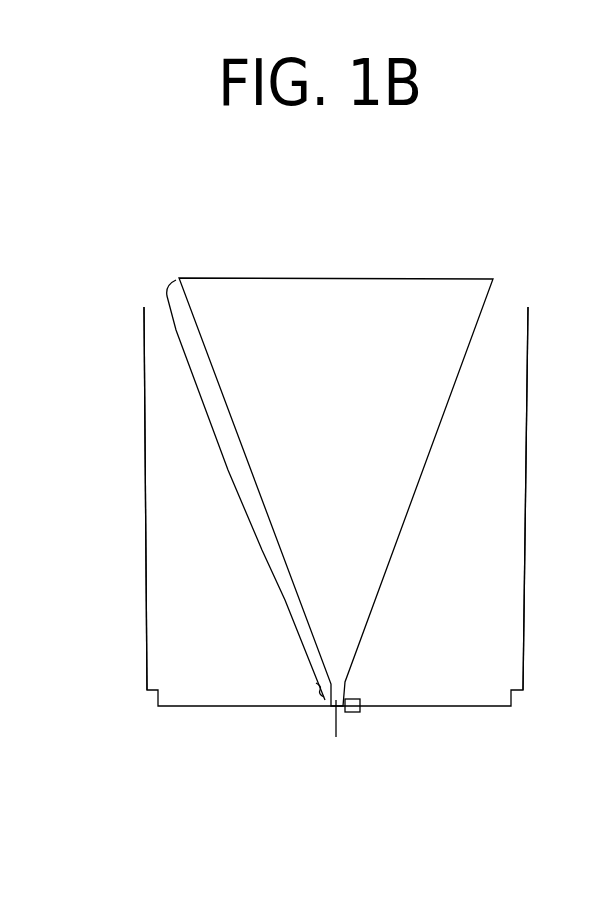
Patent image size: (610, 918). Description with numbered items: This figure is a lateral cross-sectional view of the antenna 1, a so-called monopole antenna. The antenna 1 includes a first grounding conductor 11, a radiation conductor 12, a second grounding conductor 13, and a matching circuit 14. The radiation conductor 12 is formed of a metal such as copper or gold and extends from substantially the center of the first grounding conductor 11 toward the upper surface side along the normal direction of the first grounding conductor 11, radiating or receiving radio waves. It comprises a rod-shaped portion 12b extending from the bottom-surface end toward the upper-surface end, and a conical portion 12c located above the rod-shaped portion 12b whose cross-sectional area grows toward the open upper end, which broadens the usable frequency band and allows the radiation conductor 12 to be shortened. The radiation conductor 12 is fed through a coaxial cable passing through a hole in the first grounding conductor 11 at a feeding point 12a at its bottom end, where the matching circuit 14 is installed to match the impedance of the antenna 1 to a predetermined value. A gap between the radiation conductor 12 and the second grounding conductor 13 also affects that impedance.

The antenna 1 is at (497, 763).
The first grounding conductor 11 is at (212, 707).
The radiation conductor 12 is at (455, 291).
The feeding point 12a is at (328, 712).
The rod-shaped portion 12b is at (299, 691).
The conical portion 12c is at (242, 502).
The second grounding conductor 13 is at (146, 480).
The matching circuit 14 is at (352, 713).